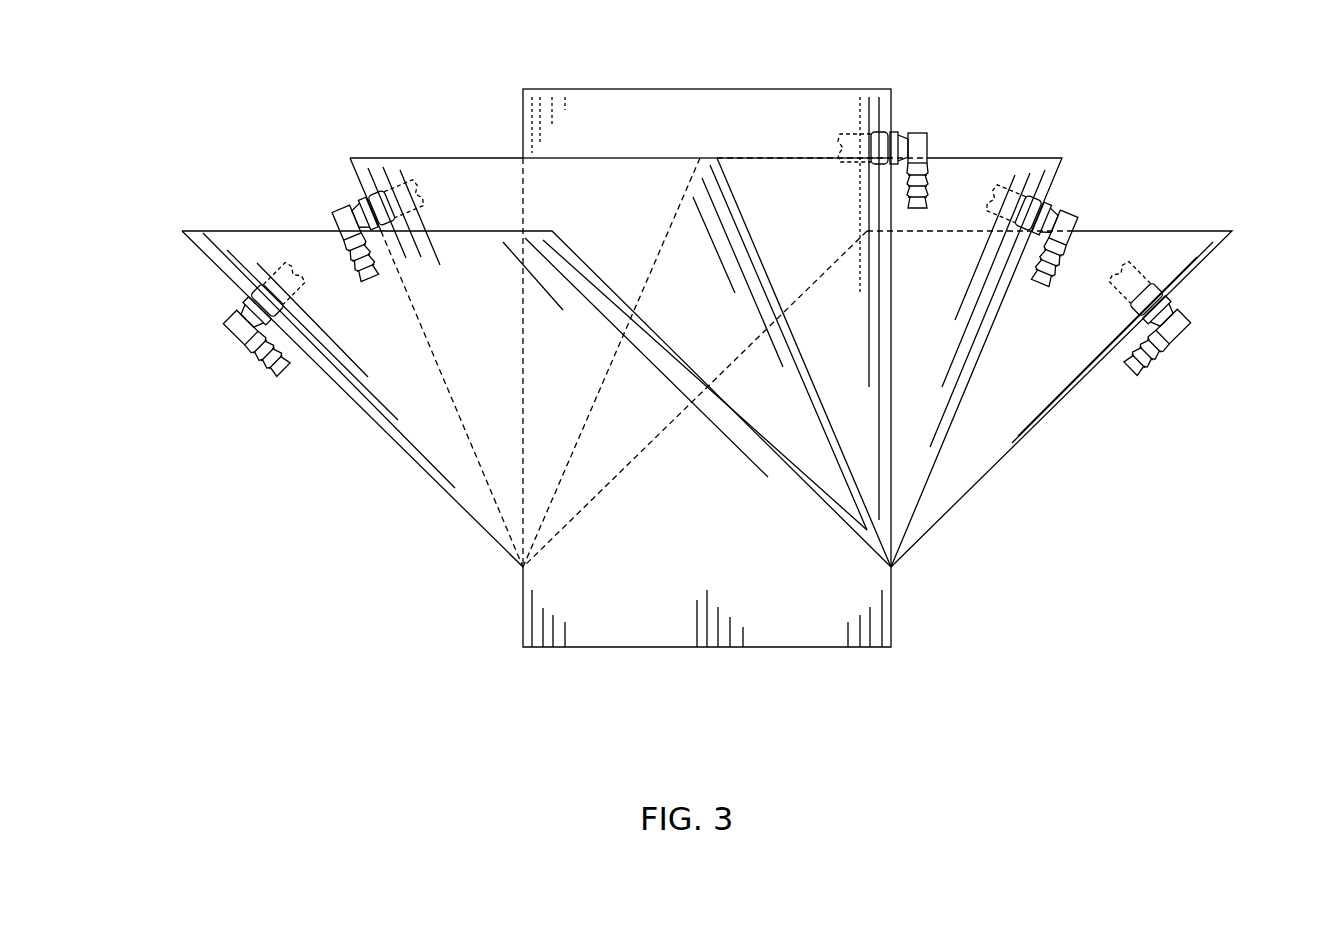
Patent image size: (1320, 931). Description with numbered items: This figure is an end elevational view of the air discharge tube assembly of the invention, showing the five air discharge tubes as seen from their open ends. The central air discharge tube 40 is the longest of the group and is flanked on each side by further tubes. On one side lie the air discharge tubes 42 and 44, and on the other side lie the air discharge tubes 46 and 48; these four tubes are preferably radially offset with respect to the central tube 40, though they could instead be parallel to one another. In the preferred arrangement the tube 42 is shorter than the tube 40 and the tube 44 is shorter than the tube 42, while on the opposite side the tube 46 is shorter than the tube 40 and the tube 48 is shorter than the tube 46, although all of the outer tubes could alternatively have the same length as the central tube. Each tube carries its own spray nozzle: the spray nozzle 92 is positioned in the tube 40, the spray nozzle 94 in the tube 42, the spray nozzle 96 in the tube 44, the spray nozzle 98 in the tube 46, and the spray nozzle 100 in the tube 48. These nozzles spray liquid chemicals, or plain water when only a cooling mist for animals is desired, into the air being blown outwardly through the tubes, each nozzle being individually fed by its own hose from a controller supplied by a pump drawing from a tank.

The air discharge tube 40 is at (662, 85).
The air discharge tube 42 is at (446, 155).
The air discharge tube 44 is at (252, 228).
The air discharge tube 46 is at (1002, 155).
The air discharge tube 48 is at (1118, 228).
The spray nozzle 92 is at (922, 128).
The spray nozzle 94 is at (343, 214).
The spray nozzle 96 is at (243, 353).
The spray nozzle 98 is at (1072, 213).
The spray nozzle 100 is at (1188, 338).